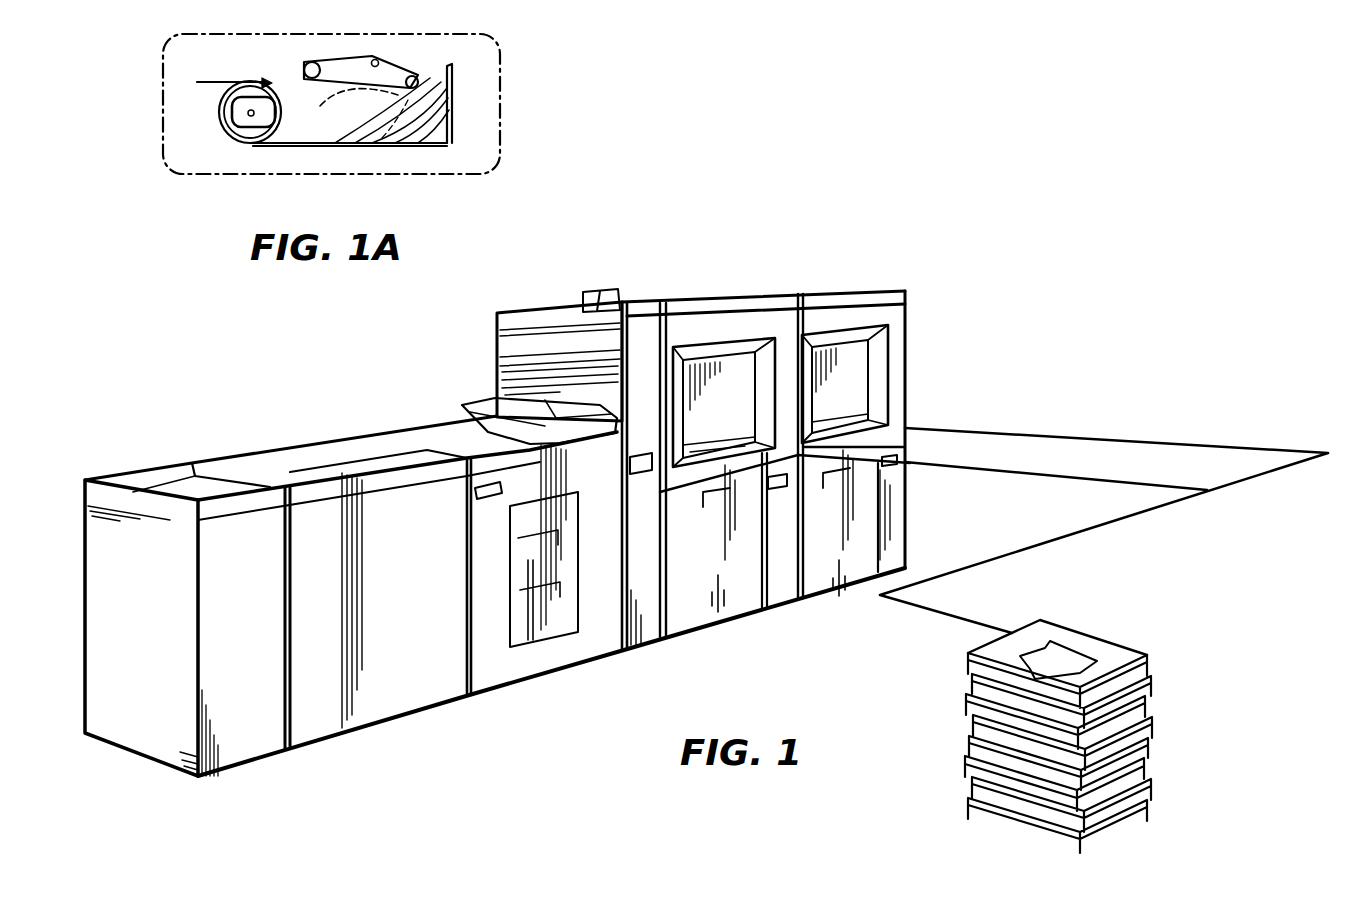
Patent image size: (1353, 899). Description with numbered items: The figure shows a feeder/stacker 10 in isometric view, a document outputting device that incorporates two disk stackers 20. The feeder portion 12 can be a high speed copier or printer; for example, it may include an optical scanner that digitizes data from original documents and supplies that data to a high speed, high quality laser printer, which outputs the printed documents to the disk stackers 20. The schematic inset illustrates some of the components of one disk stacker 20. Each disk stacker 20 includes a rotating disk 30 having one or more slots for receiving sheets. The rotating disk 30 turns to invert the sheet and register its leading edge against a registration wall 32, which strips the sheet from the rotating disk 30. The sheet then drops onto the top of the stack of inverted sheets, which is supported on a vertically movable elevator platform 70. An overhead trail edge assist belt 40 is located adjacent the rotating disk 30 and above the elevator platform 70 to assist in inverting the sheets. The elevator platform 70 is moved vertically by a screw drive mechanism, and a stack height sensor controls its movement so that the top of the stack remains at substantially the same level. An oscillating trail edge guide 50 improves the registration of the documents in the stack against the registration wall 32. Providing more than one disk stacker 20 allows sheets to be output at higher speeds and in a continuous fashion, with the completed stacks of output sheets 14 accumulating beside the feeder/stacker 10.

In FIG. 1, the feeder/stacker 10 is at (930, 278).
In FIG. 1, the feeder portion 12 is at (317, 443).
In FIG. 1, the stack of printed sheets 14 is at (1060, 625).
In FIG. 1, the disk stacker 20 is at (807, 291).
In FIG. 1A, the rotating disk 30 is at (222, 122).
In FIG. 1A, the registration wall 32 is at (257, 142).
In FIG. 1A, the overhead trail edge assist belt 40 is at (353, 56).
In FIG. 1A, the oscillating trail edge guide 50 is at (458, 80).
In FIG. 1A, the elevator platform 70 is at (338, 148).